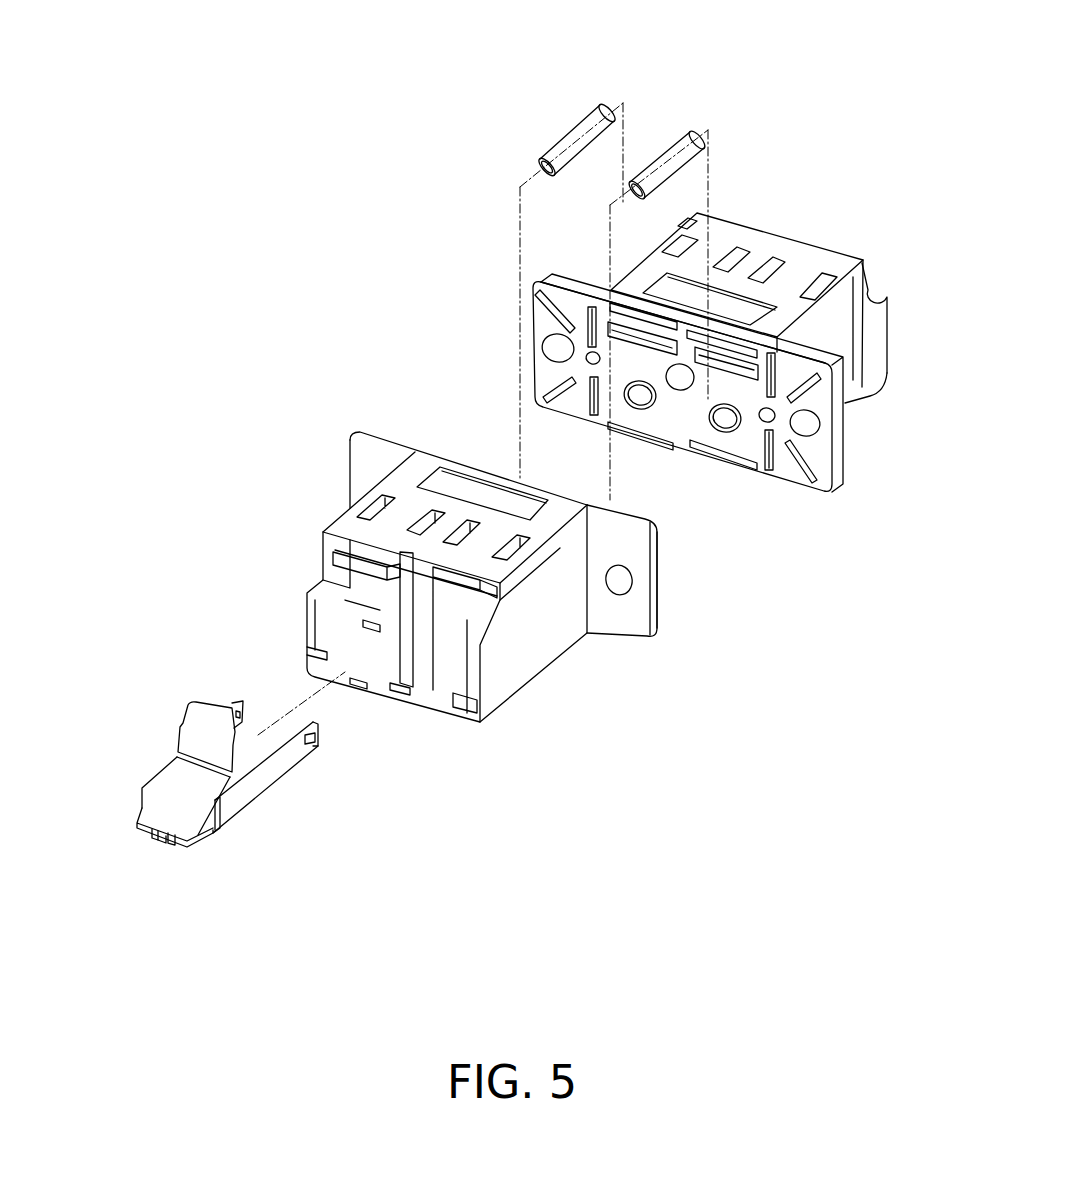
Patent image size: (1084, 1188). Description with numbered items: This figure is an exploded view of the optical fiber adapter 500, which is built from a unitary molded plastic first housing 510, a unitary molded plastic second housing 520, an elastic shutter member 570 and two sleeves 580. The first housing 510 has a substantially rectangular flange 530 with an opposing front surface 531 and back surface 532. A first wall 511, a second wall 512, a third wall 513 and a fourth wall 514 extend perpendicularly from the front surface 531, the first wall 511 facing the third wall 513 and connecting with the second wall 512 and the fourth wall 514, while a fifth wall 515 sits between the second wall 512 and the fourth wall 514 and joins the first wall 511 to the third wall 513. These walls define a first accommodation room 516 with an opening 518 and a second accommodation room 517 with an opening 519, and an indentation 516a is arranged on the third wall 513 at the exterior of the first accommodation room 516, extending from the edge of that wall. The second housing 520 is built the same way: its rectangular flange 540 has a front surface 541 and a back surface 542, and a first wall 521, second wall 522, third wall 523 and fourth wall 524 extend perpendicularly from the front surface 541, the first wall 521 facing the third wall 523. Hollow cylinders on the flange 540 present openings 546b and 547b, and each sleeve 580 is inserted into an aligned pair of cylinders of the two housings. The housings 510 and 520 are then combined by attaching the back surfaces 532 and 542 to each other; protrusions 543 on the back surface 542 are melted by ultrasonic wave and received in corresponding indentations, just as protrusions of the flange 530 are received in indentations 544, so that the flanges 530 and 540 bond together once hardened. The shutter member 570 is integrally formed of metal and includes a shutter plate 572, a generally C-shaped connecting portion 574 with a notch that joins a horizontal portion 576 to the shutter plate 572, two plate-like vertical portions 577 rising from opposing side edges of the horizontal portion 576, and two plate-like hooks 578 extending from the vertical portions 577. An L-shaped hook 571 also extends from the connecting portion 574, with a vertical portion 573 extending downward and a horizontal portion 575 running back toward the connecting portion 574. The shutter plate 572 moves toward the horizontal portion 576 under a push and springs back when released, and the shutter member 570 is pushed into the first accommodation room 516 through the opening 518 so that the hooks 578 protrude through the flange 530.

The optical fiber adapter 500 is at (238, 80).
The first housing 510 is at (243, 385).
The first wall 511 is at (403, 495).
The second wall 512 is at (308, 603).
The third wall 513 is at (390, 690).
The fourth wall 514 is at (538, 650).
The fifth wall 515 is at (348, 657).
The first accommodation room 516 is at (392, 635).
The indentation 516a is at (348, 683).
The second accommodation room 517 is at (445, 667).
The opening 518 is at (363, 678).
The opening 519 is at (463, 690).
The second housing 520 is at (833, 155).
The first wall 521 is at (862, 265).
The second wall 522 is at (872, 363).
The third wall 523 is at (850, 407).
The fourth wall 524 is at (693, 225).
The flange 530 is at (640, 520).
The front surface 531 is at (632, 630).
The back surface 532 is at (662, 613).
The flange 540 is at (557, 275).
The front surface 541 is at (578, 280).
The back surface 542 is at (800, 477).
The protrusions 543 is at (573, 315).
The indentations 544 is at (587, 317).
The opening 546b is at (720, 420).
The opening 547b is at (637, 395).
The elastic shutter member 570 is at (281, 917).
The hook 571 is at (158, 843).
The shutter plate 572 is at (205, 738).
The vertical portion 573 is at (165, 847).
The connecting portion 574 is at (138, 822).
The horizontal portion 575 is at (172, 847).
The horizontal portion 576 is at (210, 830).
The vertical portions 577 is at (267, 777).
The hooks 578 is at (235, 712).
The sleeves 580 is at (560, 150).